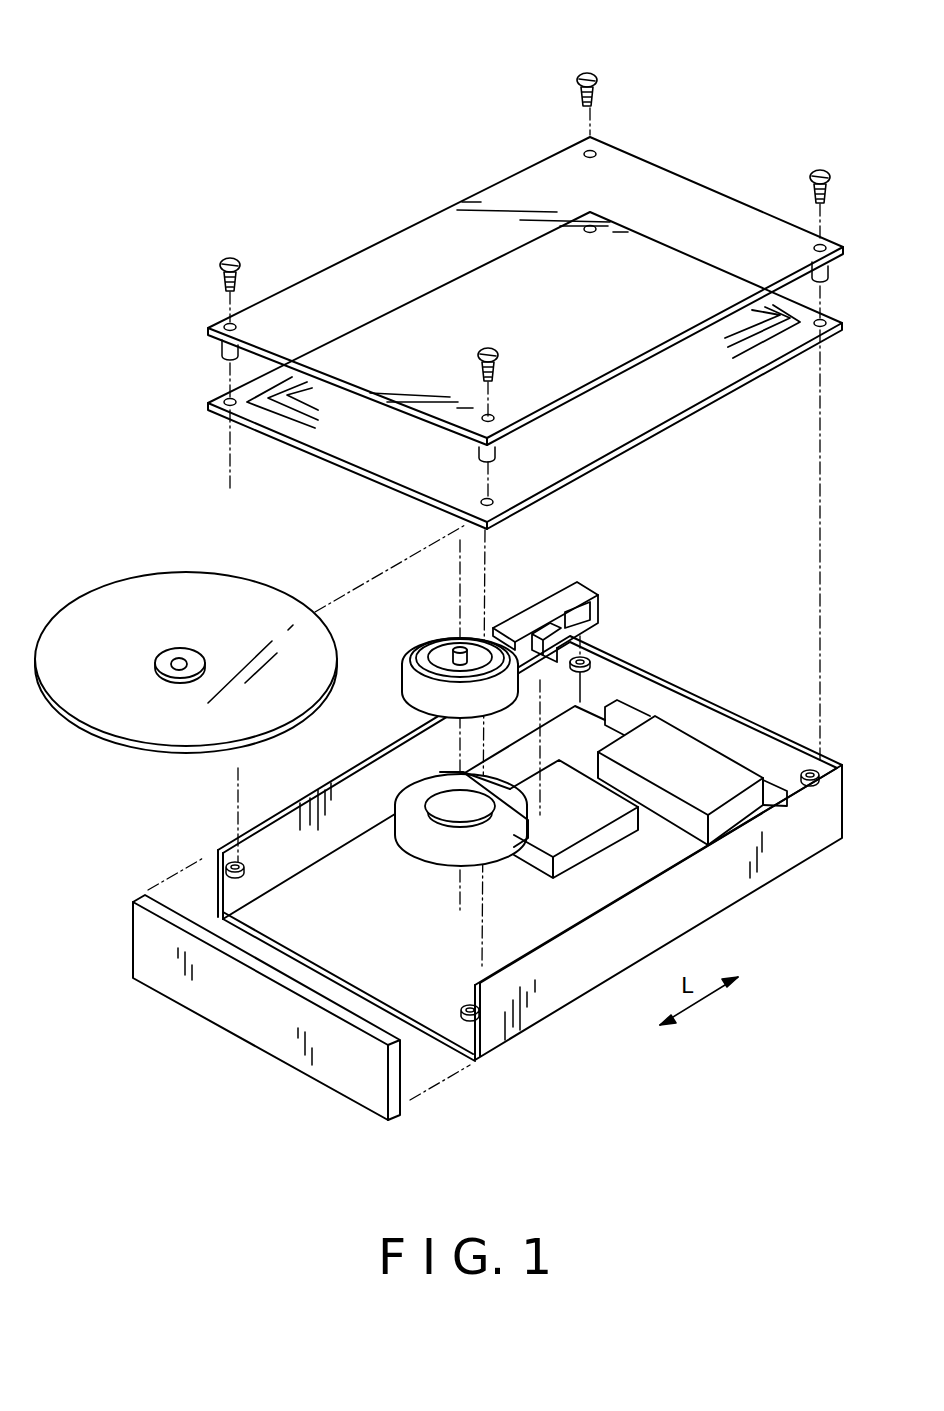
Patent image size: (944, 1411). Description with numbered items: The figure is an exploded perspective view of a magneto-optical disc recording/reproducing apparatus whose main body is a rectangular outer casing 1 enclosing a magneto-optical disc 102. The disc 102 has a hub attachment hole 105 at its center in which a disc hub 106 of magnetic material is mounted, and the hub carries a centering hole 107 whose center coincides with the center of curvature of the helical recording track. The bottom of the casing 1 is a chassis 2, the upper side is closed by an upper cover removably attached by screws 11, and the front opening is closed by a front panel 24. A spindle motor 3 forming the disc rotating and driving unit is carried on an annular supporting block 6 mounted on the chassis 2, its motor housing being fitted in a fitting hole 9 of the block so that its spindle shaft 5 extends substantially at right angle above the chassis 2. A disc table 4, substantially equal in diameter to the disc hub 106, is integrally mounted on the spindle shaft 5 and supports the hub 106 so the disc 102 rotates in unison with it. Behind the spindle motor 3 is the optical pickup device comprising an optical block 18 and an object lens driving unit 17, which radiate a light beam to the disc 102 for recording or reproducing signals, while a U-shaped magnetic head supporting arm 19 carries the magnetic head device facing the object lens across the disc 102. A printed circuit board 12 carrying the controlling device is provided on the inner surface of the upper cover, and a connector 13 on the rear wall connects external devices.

The outer casing 1 is at (583, 1005).
The chassis 2 is at (510, 1000).
The spindle motor 3 is at (432, 710).
The disc table 4 is at (427, 654).
The spindle shaft 5 is at (447, 635).
The annular supporting block 6 is at (487, 852).
The fitting hole 9 is at (447, 807).
The screws 11 is at (237, 262).
The printed circuit board 12 is at (725, 373).
The connector 13 is at (628, 710).
The object lens driving unit 17 is at (580, 852).
The optical block 18 is at (700, 760).
The magnetic head supporting arm 19 is at (593, 623).
The front panel 24 is at (405, 1093).
The magneto-optical disc 102 is at (233, 610).
The hub attachment hole 105 is at (168, 678).
The disc hub 106 is at (165, 670).
The centering hole 107 is at (165, 652).